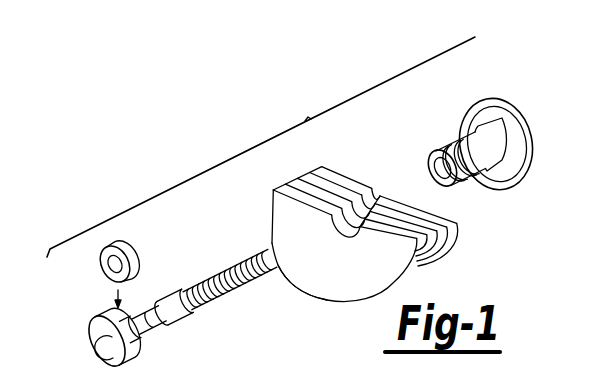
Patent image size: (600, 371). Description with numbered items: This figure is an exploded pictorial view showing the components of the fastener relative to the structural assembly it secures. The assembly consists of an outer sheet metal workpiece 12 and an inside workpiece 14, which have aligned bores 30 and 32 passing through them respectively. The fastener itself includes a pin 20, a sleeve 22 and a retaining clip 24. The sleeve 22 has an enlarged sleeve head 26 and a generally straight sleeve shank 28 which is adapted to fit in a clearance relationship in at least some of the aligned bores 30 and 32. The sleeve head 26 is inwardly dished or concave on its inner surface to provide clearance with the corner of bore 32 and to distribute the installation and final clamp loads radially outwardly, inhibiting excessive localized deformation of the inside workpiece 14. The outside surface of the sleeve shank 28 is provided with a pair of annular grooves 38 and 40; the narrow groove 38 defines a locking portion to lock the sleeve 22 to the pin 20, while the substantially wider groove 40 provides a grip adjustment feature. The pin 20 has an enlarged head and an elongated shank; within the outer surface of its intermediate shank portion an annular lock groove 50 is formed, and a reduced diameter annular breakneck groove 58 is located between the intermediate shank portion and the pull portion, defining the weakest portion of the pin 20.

The workpiece 12 is at (286, 181).
The workpiece 14 is at (305, 175).
The pin 20 is at (238, 222).
The sleeve 22 is at (445, 127).
The retaining clip 24 is at (142, 236).
The sleeve head 26 is at (500, 100).
The sleeve shank 28 is at (470, 178).
The bore 30 is at (312, 288).
The bore 32 is at (381, 194).
The annular groove 38 is at (299, 360).
The annular groove 40 is at (273, 362).
The lock groove 50 is at (149, 343).
The breakneck groove 58 is at (172, 324).